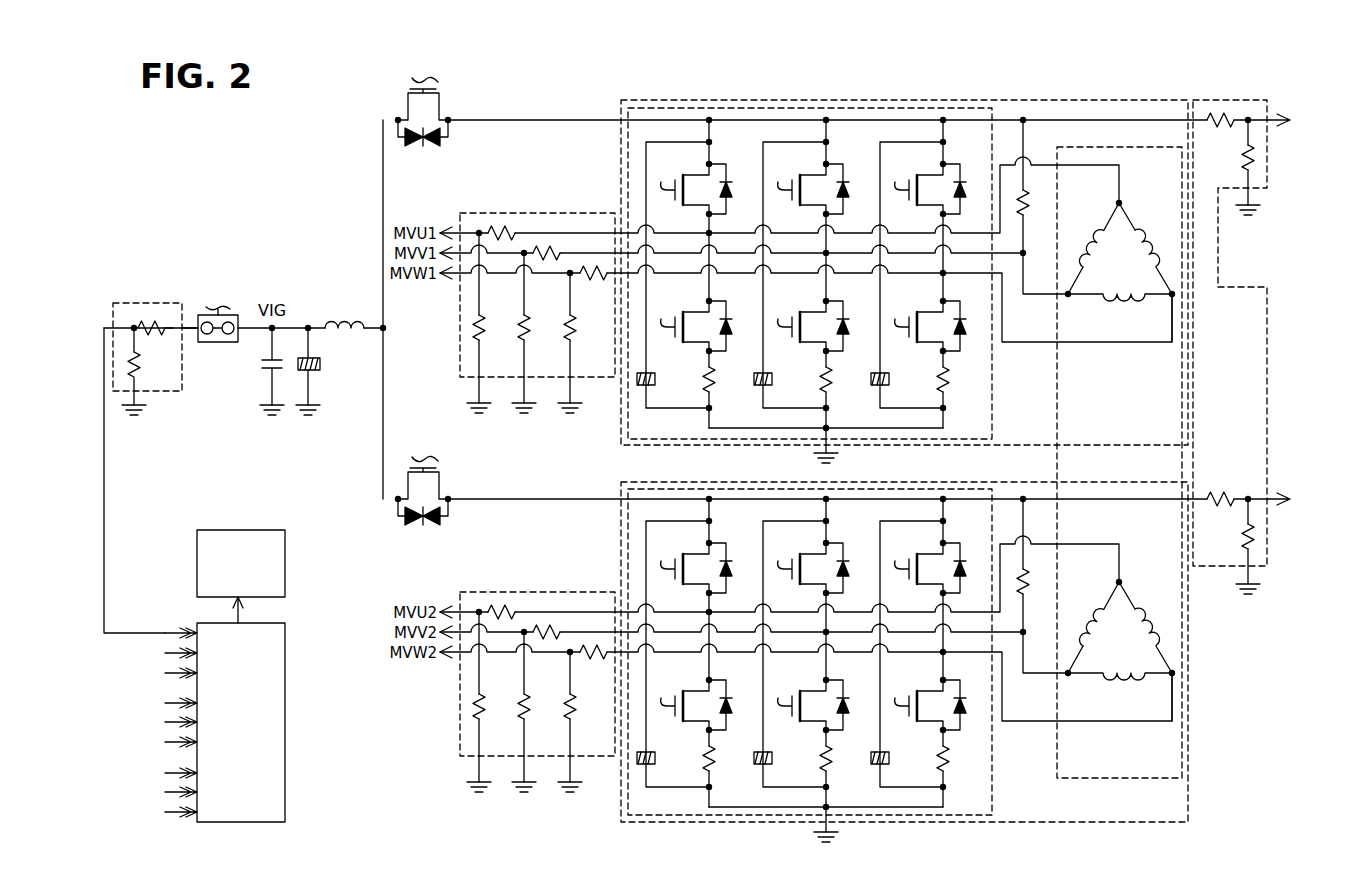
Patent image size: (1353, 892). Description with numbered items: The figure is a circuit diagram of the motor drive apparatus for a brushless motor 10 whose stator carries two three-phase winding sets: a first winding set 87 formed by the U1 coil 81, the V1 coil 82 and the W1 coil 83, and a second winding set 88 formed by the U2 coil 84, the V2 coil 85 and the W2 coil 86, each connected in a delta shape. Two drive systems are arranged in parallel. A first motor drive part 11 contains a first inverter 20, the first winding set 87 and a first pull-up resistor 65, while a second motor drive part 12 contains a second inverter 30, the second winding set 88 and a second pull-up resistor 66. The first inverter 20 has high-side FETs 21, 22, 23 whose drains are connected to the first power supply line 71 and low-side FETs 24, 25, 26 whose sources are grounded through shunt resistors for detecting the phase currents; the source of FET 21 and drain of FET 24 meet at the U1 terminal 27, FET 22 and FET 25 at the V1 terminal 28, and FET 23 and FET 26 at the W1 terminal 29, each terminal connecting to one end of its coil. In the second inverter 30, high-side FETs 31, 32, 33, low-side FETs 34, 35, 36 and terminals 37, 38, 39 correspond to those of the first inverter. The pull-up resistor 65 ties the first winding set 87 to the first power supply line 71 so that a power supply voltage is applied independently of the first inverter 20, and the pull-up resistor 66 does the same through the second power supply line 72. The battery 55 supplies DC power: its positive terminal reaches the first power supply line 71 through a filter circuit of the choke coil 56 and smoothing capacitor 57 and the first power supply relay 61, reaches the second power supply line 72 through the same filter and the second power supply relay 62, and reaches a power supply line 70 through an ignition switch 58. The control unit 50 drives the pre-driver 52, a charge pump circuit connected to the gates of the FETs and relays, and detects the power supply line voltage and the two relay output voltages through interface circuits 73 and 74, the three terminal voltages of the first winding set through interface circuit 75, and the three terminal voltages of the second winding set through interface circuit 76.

The motor 10 is at (1110, 779).
The first motor drive part 11 is at (780, 285).
The second motor drive part 12 is at (780, 665).
The first inverter 20 is at (994, 373).
The second inverter 30 is at (994, 750).
The high-side FET 21 is at (718, 197).
The high-side FET 22 is at (835, 197).
The high-side FET 23 is at (952, 197).
The low-side FET 24 is at (717, 327).
The low-side FET 25 is at (834, 327).
The low-side FET 26 is at (951, 327).
The U1 terminal 27 is at (706, 238).
The V1 terminal 28 is at (823, 258).
The W1 terminal 29 is at (940, 278).
The high-side FET 31 is at (718, 576).
The high-side FET 32 is at (835, 576).
The high-side FET 33 is at (952, 576).
The low-side FET 34 is at (717, 706).
The low-side FET 35 is at (834, 706).
The low-side FET 36 is at (951, 706).
The terminal 37 is at (706, 617).
The terminal 38 is at (823, 637).
The terminal 39 is at (940, 657).
The electronic control unit 50 is at (238, 824).
The pre-driver 52 is at (210, 528).
The battery 55 is at (268, 356).
The choke coil 56 is at (348, 317).
The smoothing capacitor 57 is at (320, 358).
The ignition switch 58 is at (212, 343).
The first power supply relay 61 is at (440, 100).
The second power supply relay 62 is at (440, 479).
The first pull-up resistor 65 is at (1030, 203).
The second pull-up resistor 66 is at (1030, 582).
The power supply line 70 is at (188, 323).
The first power supply line 71 is at (500, 118).
The second power supply line 72 is at (500, 497).
The interface circuit 73 is at (173, 393).
The interface circuit 74 is at (1212, 568).
The interface circuit 75 is at (537, 212).
The interface circuit 76 is at (537, 591).
The U1 coil 81 is at (1093, 237).
The V1 coil 82 is at (1104, 302).
The W1 coil 83 is at (1148, 237).
The U2 coil 84 is at (1093, 616).
The V2 coil 85 is at (1104, 681).
The W2 coil 86 is at (1148, 616).
The first winding set 87 is at (1158, 309).
The second winding set 88 is at (1158, 688).